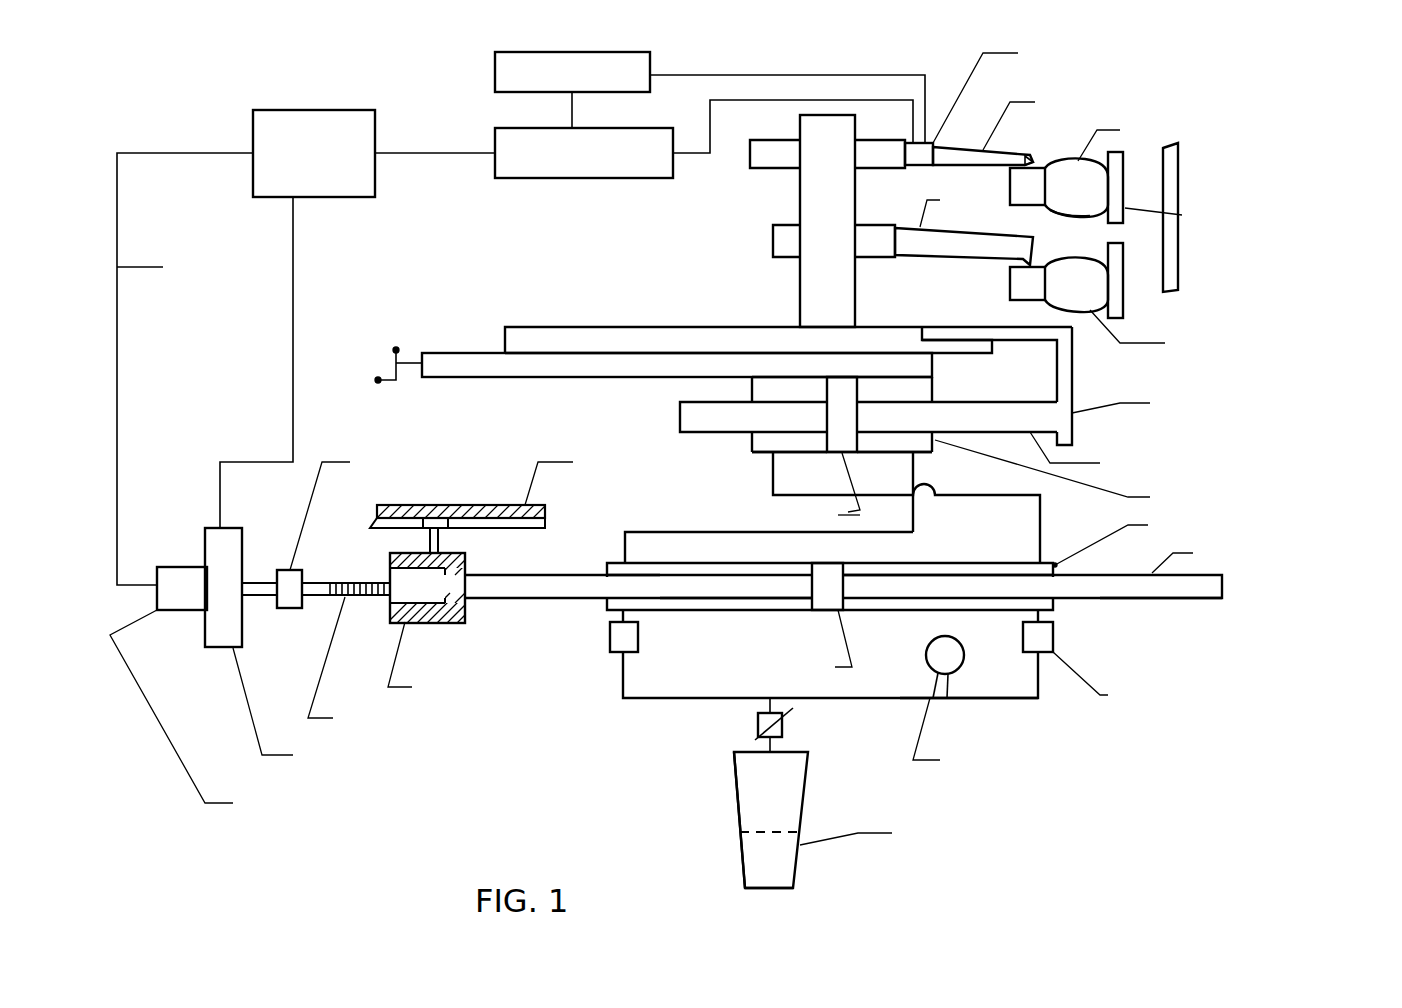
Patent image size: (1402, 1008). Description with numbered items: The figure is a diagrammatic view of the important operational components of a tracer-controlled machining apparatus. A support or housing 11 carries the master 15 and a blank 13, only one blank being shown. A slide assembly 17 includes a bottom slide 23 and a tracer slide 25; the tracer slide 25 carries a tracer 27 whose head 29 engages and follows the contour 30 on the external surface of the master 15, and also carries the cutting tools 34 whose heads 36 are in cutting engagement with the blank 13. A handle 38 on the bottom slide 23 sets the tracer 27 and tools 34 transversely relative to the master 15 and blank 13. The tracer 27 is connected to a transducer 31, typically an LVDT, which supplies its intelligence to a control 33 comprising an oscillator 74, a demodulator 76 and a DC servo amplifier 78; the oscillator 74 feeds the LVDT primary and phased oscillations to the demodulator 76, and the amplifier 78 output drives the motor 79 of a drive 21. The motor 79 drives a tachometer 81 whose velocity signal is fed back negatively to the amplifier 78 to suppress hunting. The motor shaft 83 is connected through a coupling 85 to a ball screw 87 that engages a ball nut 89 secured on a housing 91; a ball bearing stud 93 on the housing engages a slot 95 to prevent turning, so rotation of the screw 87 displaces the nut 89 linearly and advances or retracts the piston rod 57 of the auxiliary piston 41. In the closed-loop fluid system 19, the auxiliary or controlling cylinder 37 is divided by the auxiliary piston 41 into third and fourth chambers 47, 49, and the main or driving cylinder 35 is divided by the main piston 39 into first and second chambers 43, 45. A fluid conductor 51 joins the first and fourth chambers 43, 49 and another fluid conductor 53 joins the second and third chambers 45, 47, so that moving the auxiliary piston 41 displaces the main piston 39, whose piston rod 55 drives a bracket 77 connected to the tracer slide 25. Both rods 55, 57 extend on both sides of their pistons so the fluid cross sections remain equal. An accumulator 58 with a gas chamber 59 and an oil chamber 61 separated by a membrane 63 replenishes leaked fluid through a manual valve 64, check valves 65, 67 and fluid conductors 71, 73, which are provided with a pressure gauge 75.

The support or housing 11 is at (1178, 165).
The blank 13 is at (1010, 288).
The master 15 is at (1065, 172).
The slide assembly 17 is at (728, 292).
The closed-loop fluid system 19 is at (692, 482).
The drive 21 is at (293, 676).
The bottom slide 23 is at (546, 378).
The tracer slide 25 is at (585, 325).
The tracer 27 is at (950, 152).
The tracer head 29 is at (1017, 165).
The contour 30 is at (1057, 214).
The transducer (LVDT) 31 is at (925, 165).
The control 33 is at (640, 42).
The cutting tool 34 is at (902, 257).
The main cylinder 35 is at (752, 445).
The tool head 36 is at (1015, 262).
The auxiliary cylinder 37 is at (605, 575).
The handle 38 is at (378, 385).
The main piston 39 is at (837, 445).
The auxiliary piston 41 is at (823, 612).
The first chamber 43 is at (766, 445).
The second chamber 45 is at (912, 437).
The third chamber 47 is at (726, 605).
The fourth chamber 49 is at (955, 575).
The fluid conductor 51 is at (1042, 533).
The fluid conductor 53 is at (680, 524).
The piston rod 55 is at (978, 402).
The piston rod 57 is at (683, 600).
The accumulator 58 is at (812, 775).
The accumulator gas chamber 59 is at (753, 855).
The accumulator fluid chamber 61 is at (745, 790).
The membrane 63 is at (780, 832).
The manual valve 64 is at (790, 725).
The check valve 65 is at (610, 637).
The check valve 67 is at (1053, 637).
The fluid conductor 71 is at (688, 700).
The fluid conductor 73 is at (1003, 700).
The oscillator 74 is at (495, 70).
The pressure gauge 75 is at (926, 655).
The demodulator 76 is at (495, 143).
The bracket 77 is at (1072, 382).
The DC servo amplifier 78 is at (253, 135).
The motor 79 is at (205, 630).
The tachometer 81 is at (179, 567).
The motor shaft 83 is at (258, 582).
The coupling 85 is at (290, 608).
The ball screw 87 is at (348, 583).
The ball nut 89 is at (390, 600).
The housing 91 is at (438, 623).
The ball bearing stud 93 is at (420, 523).
The slot 95 is at (500, 523).